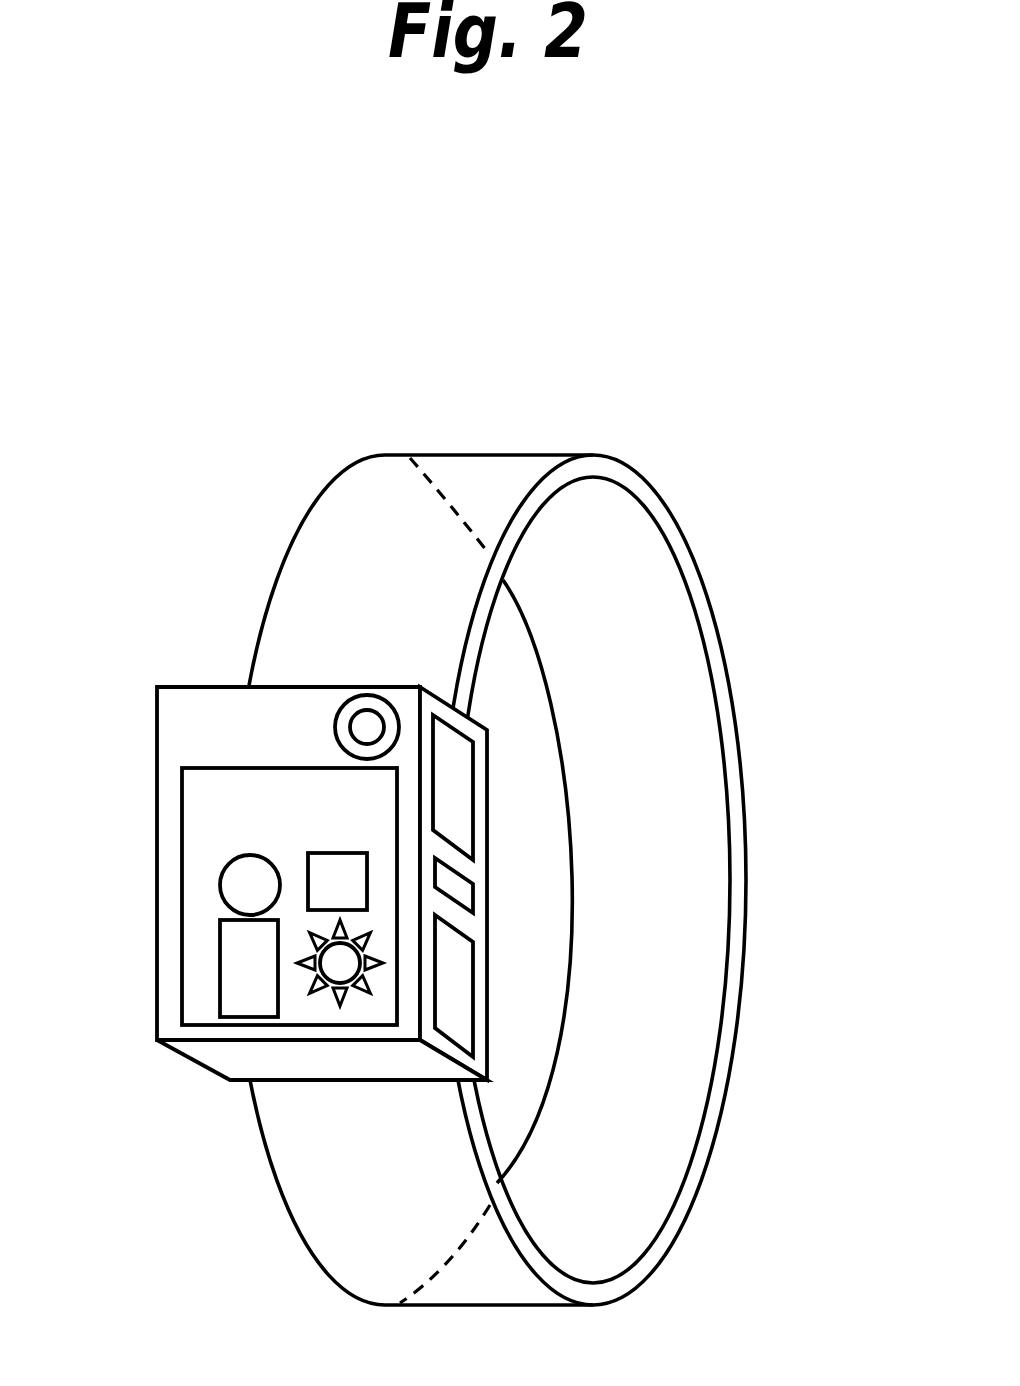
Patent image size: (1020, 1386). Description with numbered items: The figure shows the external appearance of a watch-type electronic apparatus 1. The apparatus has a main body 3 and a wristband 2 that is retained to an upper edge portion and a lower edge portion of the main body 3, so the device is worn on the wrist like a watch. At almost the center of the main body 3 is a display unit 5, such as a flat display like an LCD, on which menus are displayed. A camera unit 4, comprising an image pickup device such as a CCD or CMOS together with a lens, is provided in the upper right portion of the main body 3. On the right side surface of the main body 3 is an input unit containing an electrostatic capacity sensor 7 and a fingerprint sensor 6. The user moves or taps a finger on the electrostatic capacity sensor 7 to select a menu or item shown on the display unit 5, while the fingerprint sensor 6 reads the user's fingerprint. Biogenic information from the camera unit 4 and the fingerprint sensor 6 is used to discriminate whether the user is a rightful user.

The electronic apparatus 1 is at (586, 310).
The wristband 2 is at (358, 1152).
The main body 3 is at (192, 725).
The camera unit 4 is at (365, 692).
The display unit 5 is at (230, 842).
The fingerprint sensor 6 is at (452, 883).
The electrostatic capacity sensor 7 is at (453, 985).